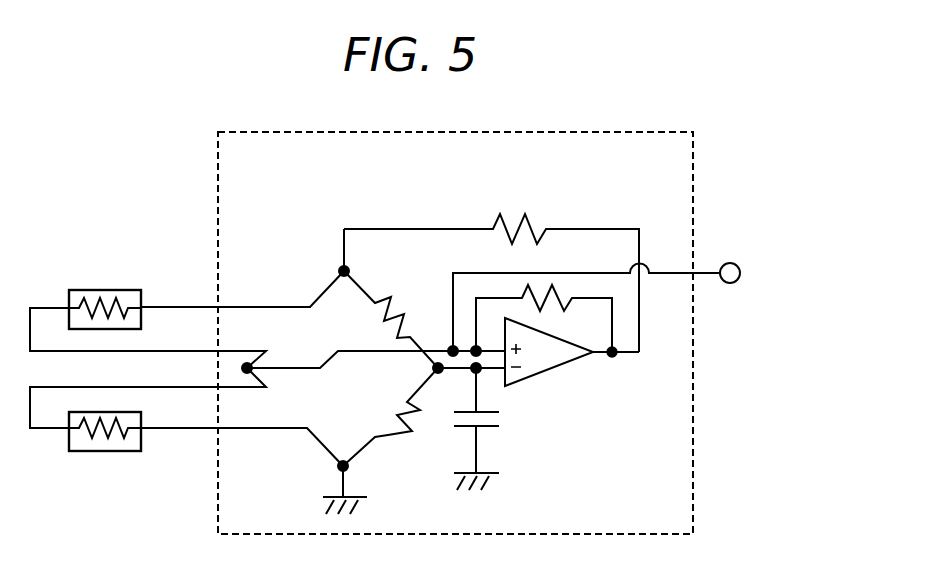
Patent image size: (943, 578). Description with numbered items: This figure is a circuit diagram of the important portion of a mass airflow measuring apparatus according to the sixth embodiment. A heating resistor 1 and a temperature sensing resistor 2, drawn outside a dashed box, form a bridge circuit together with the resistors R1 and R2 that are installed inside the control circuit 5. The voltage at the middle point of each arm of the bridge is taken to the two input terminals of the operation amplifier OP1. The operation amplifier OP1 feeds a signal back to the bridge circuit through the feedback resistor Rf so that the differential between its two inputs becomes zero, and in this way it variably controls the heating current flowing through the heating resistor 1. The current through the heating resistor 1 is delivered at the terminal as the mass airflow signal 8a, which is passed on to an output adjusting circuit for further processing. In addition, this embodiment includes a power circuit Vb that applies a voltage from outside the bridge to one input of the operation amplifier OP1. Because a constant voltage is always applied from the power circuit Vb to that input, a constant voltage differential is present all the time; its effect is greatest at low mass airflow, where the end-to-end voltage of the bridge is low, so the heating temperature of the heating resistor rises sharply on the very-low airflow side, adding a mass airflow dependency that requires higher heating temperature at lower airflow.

The heating resistor 1 is at (108, 290).
The temperature sensing resistor 2 is at (108, 451).
The control circuit 5 is at (543, 130).
The mass airflow signal 8a is at (612, 307).
The resistor R1 is at (391, 319).
The resistor R2 is at (390, 417).
The feedback resistor Rf is at (491, 269).
The operation amplifier OP1 is at (557, 368).
The power circuit Vb is at (497, 429).